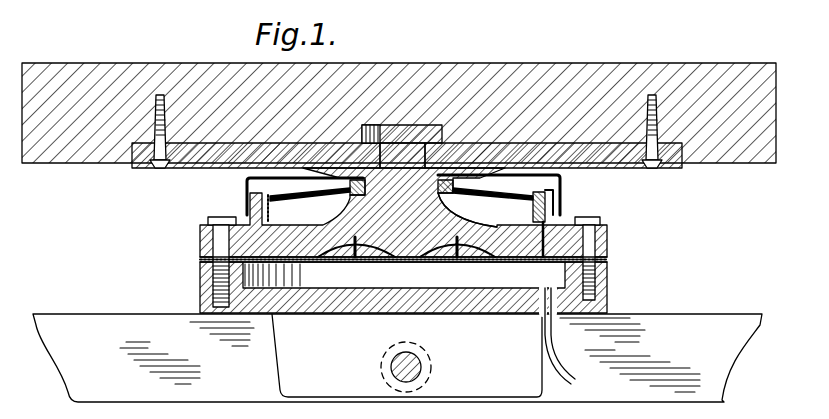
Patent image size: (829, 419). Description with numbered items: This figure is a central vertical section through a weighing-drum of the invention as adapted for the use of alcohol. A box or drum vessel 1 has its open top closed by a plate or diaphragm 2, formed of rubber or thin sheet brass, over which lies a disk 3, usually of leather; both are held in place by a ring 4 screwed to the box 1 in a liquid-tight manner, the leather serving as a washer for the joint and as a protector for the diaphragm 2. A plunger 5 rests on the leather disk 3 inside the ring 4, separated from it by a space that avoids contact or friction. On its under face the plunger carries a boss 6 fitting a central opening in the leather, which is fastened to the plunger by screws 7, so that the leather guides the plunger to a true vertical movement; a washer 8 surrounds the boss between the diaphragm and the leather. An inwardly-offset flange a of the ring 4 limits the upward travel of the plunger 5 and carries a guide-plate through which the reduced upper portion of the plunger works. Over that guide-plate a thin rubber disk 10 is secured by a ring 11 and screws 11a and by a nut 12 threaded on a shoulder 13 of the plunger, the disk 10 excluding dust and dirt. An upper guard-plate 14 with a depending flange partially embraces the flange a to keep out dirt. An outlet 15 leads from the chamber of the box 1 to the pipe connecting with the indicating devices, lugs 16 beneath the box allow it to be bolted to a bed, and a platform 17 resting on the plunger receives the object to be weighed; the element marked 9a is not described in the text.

The box or drum vessel 1 is at (607, 283).
The diaphragm 2 is at (607, 262).
The disk 3 is at (607, 256).
The ring 4 is at (607, 232).
The plunger 5 is at (458, 213).
The boss 6 is at (408, 262).
The screws 7 is at (355, 262).
The washer 8 is at (442, 262).
The contact spring 9a is at (528, 201).
The thin disk 10 is at (499, 195).
The ring 11 is at (275, 198).
The screws 11a is at (560, 211).
The nut 12 is at (453, 190).
The shoulder 13 is at (350, 190).
The upper guard-plate 14 is at (247, 180).
The outlet 15 is at (546, 290).
The lugs 16 is at (397, 358).
The platform 17 is at (452, 63).
The inwardly-offset flange a is at (270, 213).